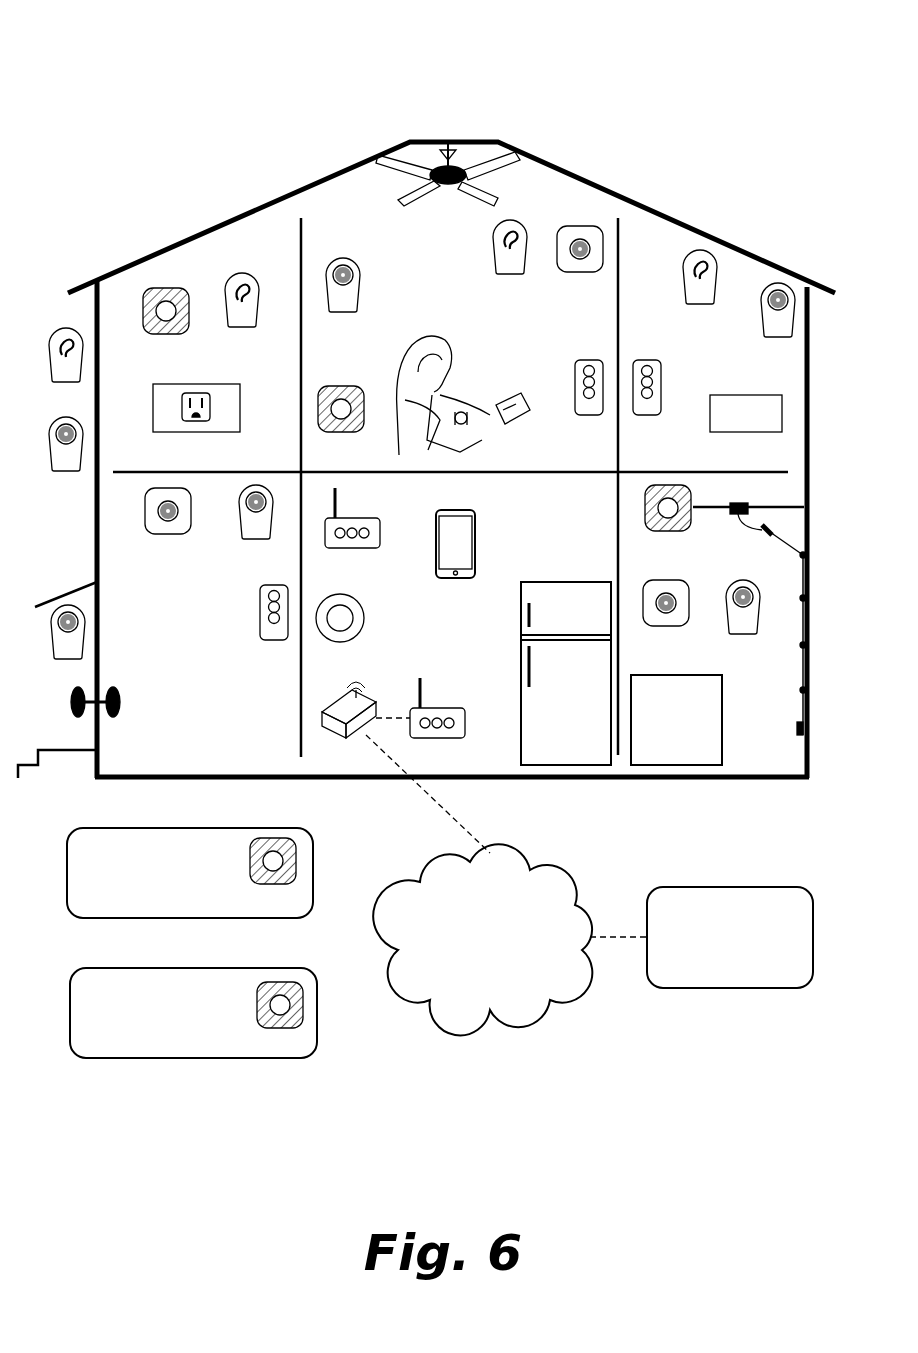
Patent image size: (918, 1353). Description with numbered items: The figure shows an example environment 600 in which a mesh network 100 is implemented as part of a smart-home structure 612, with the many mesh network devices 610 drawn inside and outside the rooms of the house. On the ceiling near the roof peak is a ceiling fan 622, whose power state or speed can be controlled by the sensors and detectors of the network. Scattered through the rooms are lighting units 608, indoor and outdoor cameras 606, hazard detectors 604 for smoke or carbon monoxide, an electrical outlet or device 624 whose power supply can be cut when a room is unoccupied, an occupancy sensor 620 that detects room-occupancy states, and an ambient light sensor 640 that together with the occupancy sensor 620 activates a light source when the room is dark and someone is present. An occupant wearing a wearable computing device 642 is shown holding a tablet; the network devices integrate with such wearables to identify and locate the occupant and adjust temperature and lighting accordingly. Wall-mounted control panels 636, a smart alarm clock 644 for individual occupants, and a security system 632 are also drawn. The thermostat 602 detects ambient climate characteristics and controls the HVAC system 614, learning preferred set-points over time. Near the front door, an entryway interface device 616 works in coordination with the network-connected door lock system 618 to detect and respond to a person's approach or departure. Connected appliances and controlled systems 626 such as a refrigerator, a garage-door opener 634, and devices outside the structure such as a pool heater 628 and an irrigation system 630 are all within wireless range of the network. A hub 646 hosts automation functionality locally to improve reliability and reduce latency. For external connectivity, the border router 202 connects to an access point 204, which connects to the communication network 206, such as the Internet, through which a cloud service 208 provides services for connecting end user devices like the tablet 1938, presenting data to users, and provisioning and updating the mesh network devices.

The environment 600 is at (165, 58).
The mesh network 100 is at (358, 230).
The structure 612 is at (208, 229).
The ceiling fan 622 is at (448, 183).
The lighting unit 608 is at (382, 313).
The camera 606 is at (404, 538).
The mesh network device 610 is at (253, 372).
The hazard detector 604 is at (417, 442).
The electrical outlet or device 624 is at (196, 420).
The occupancy sensor 620 is at (343, 297).
The wearable computing device 642 is at (466, 411).
The control panel 636 is at (619, 400).
The ambient light sensor 640 is at (778, 322).
The smart alarm clock 644 is at (746, 426).
The security system 632 is at (277, 625).
The hub 646 is at (352, 530).
The thermostat 602 is at (340, 630).
The mobile device / tablet 1938 is at (456, 558).
The entryway interface device 616 is at (68, 641).
The network-connected door lock system 618 is at (119, 699).
The access point 204 is at (349, 726).
The border router 202 is at (437, 720).
The connected appliance or controlled system 626 is at (566, 673).
The garage-door opener 634 is at (668, 521).
The HVAC system 614 is at (676, 720).
The pool heater 628 is at (190, 873).
The irrigation system 630 is at (193, 1013).
The communication network 206 is at (482, 939).
The cloud service 208 is at (730, 937).